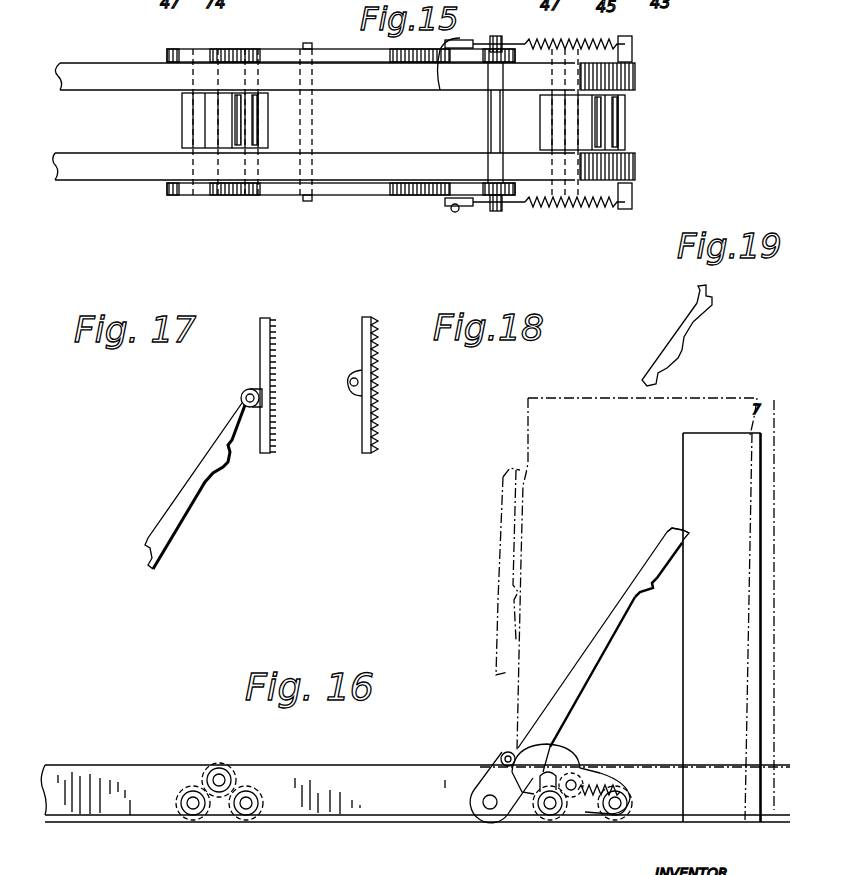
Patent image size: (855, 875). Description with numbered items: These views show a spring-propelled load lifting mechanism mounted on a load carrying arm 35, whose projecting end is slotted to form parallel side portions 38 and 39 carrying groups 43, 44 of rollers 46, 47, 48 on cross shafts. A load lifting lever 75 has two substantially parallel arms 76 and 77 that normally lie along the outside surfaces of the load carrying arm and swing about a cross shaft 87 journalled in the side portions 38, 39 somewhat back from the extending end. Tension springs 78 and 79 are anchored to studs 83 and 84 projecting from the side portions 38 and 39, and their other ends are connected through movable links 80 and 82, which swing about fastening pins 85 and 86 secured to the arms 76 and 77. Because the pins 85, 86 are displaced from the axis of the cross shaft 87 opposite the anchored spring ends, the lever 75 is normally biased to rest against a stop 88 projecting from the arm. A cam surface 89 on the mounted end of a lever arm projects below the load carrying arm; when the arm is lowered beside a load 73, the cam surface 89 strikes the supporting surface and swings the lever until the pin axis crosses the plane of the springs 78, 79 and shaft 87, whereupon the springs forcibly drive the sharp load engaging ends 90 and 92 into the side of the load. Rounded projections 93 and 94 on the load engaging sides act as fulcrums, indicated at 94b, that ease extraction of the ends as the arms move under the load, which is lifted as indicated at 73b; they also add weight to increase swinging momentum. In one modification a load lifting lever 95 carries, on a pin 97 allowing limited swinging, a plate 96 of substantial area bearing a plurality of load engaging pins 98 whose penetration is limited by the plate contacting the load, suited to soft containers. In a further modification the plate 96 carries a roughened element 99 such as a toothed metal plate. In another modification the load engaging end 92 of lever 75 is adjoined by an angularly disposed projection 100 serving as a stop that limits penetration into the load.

In FIG. 15, the arm 35 is at (58, 75).
In FIG. 16, the arm 35 is at (40, 780).
In FIG. 15, the side portion 38 is at (105, 75).
In FIG. 15, the side portion 39 is at (135, 170).
In FIG. 16, the side portion 39 is at (315, 818).
In FIG. 15, the group of rollers 43 is at (630, 112).
In FIG. 16, the group of rollers 43 is at (560, 820).
In FIG. 15, the group of rollers 44 is at (226, 133).
In FIG. 15, the roller 46 is at (268, 110).
In FIG. 16, the roller 46 is at (246, 818).
In FIG. 15, the roller 47 is at (190, 131).
In FIG. 16, the roller 47 is at (193, 818).
In FIG. 15, the roller 48 is at (225, 107).
In FIG. 16, the roller 48 is at (216, 768).
In FIG. 16, the load 73 is at (683, 660).
In FIG. 16, the lifted load position 73b is at (530, 437).
In FIG. 15, the load lifting lever 75 is at (365, 195).
In FIG. 19, the load lifting lever 75 is at (648, 378).
In FIG. 16, the load lifting lever 75 is at (588, 640).
In FIG. 15, the arm 76 is at (304, 49).
In FIG. 15, the arm 77 is at (268, 195).
In FIG. 19, the arm 77 is at (660, 385).
In FIG. 16, the arm 77 is at (612, 628).
In FIG. 15, the tension spring 78 is at (615, 45).
In FIG. 15, the tension spring 79 is at (585, 205).
In FIG. 16, the tension spring 79 is at (608, 768).
In FIG. 15, the link 80 is at (472, 42).
In FIG. 15, the link 82 is at (470, 205).
In FIG. 16, the link 82 is at (560, 754).
In FIG. 15, the stud 83 is at (632, 52).
In FIG. 15, the stud 84 is at (632, 188).
In FIG. 15, the fastening pin 85 is at (437, 92).
In FIG. 15, the fastening pin 86 is at (458, 210).
In FIG. 16, the fastening pin 86 is at (501, 757).
In FIG. 15, the cross shaft 87 is at (490, 119).
In FIG. 15, the stop 88 is at (307, 43).
In FIG. 16, the cam surface 89 is at (478, 785).
In FIG. 15, the load engaging end 90 is at (165, 52).
In FIG. 15, the load engaging end 92 is at (167, 192).
In FIG. 19, the load engaging end 92 is at (714, 302).
In FIG. 16, the load engaging end 92 is at (676, 528).
In FIG. 15, the rounded projection 93 is at (228, 56).
In FIG. 15, the rounded projection 94 is at (234, 195).
In FIG. 19, the rounded projection 94 is at (685, 355).
In FIG. 16, the rounded projection 94 is at (658, 585).
In FIG. 16, the projection engagement position 94b is at (520, 525).
In FIG. 17, the load lifting lever 95 is at (185, 518).
In FIG. 17, the plate 96 is at (262, 358).
In FIG. 18, the plate 96 is at (364, 412).
In FIG. 17, the pin 97 is at (242, 398).
In FIG. 17, the load engaging pin 98 is at (276, 372).
In FIG. 18, the roughened element 99 is at (372, 392).
In FIG. 19, the projection 100 is at (705, 290).